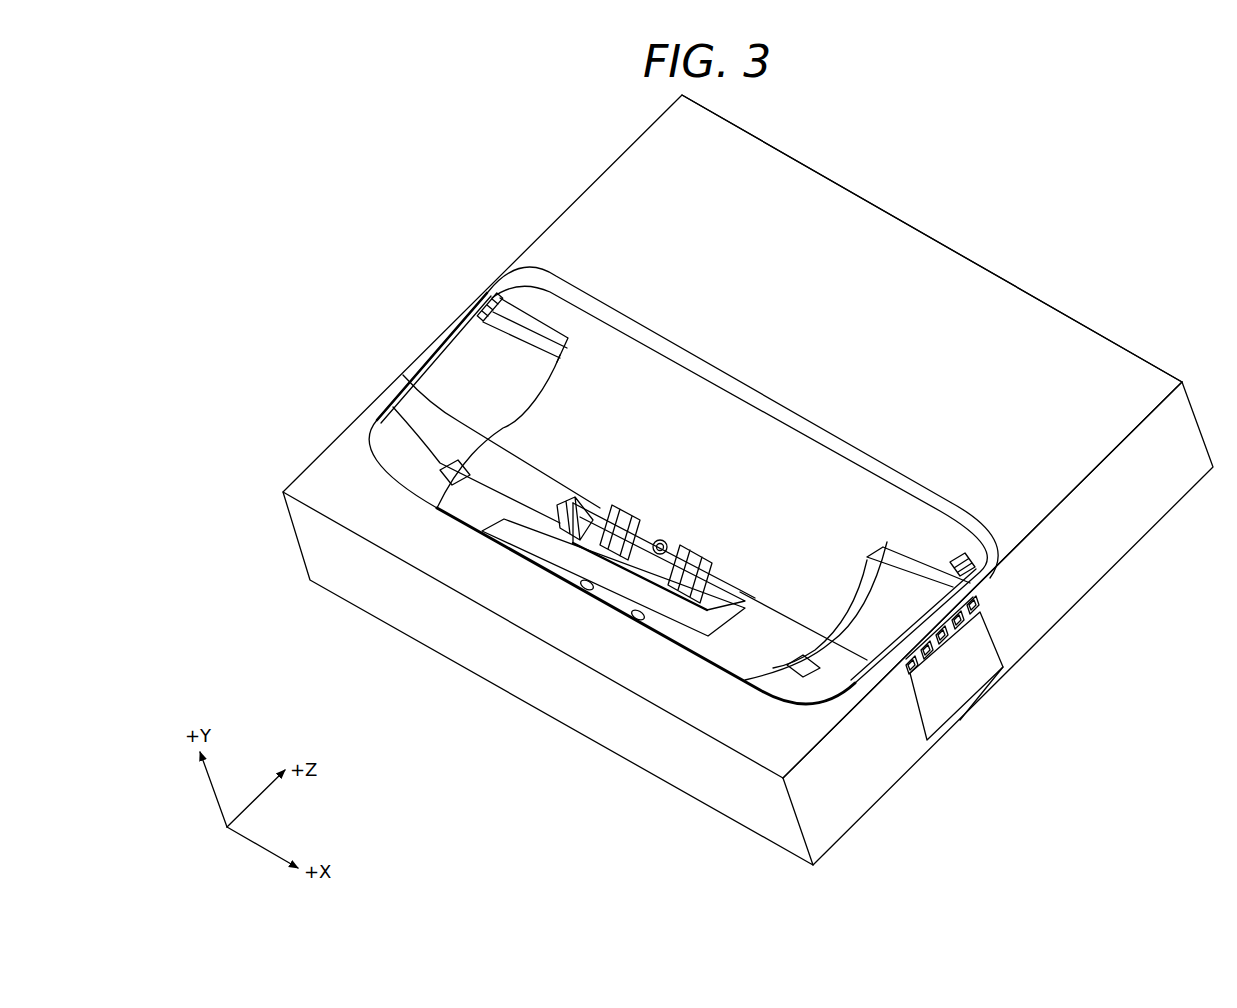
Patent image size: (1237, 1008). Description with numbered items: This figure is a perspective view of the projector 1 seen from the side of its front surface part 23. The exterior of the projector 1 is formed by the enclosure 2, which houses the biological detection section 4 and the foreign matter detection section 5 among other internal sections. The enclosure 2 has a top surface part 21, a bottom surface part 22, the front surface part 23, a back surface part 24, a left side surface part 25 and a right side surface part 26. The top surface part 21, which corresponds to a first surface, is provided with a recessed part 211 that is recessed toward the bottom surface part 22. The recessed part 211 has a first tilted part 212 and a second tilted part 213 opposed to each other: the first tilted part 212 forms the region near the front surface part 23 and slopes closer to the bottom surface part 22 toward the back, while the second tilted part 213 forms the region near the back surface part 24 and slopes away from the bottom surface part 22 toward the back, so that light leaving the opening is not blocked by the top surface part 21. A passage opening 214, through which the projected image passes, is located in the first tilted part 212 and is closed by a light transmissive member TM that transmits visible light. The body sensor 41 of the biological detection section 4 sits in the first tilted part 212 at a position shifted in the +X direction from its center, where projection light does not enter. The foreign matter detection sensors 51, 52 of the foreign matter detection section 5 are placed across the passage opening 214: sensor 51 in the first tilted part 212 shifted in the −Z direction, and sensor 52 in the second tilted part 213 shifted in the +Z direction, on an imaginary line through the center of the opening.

The projector 1 is at (750, 480).
The enclosure 2 is at (750, 480).
The top surface part 21 is at (858, 218).
The bottom surface part 22 is at (1033, 668).
The front surface part 23 is at (545, 676).
The back surface part 24 is at (990, 238).
The left side surface part 25 is at (683, 457).
The right side surface part 26 is at (1160, 492).
The recessed part 211 is at (453, 350).
The first tilted part 212 is at (727, 650).
The second tilted part 213 is at (790, 452).
The passage opening 214 is at (583, 510).
The foreign matter detection section 5 is at (657, 546).
The foreign matter detection sensor 51 is at (585, 592).
The foreign matter detection sensor 52 is at (664, 556).
The biological detection section 4 is at (645, 642).
The body sensor 41 is at (640, 621).
The light transmissive member TM is at (580, 557).